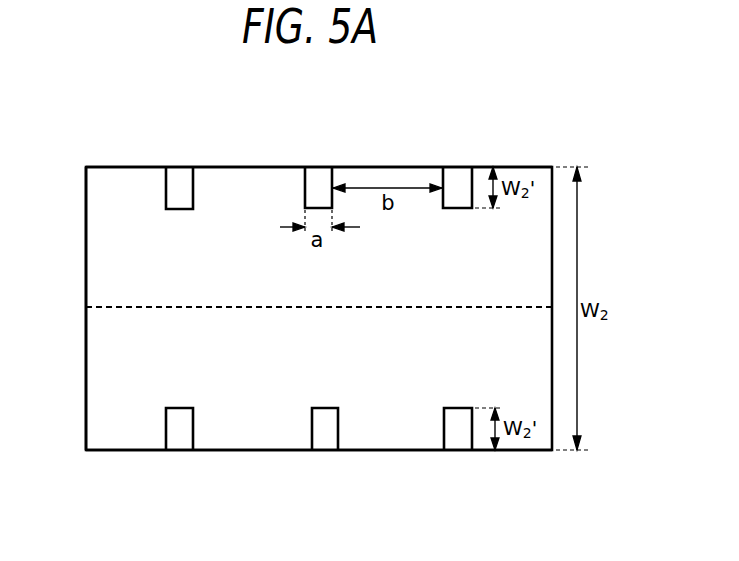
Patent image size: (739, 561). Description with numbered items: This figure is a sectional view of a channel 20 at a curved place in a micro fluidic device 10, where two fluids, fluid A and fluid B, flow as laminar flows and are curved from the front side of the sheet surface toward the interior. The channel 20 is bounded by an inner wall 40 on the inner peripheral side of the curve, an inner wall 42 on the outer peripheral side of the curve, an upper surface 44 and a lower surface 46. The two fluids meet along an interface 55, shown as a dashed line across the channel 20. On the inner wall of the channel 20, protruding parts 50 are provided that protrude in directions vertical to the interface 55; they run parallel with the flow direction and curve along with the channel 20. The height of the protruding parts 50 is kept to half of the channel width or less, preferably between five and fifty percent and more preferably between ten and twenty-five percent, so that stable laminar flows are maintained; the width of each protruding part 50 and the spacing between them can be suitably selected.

The semiconductor device 10 is at (433, 152).
The channel 20 is at (135, 220).
The inner wall 40 is at (552, 357).
The inner wall 42 is at (86, 355).
The upper surface 44 is at (257, 168).
The lower surface 46 is at (152, 449).
The protruding parts 50 is at (313, 190).
The interface 55 is at (155, 306).